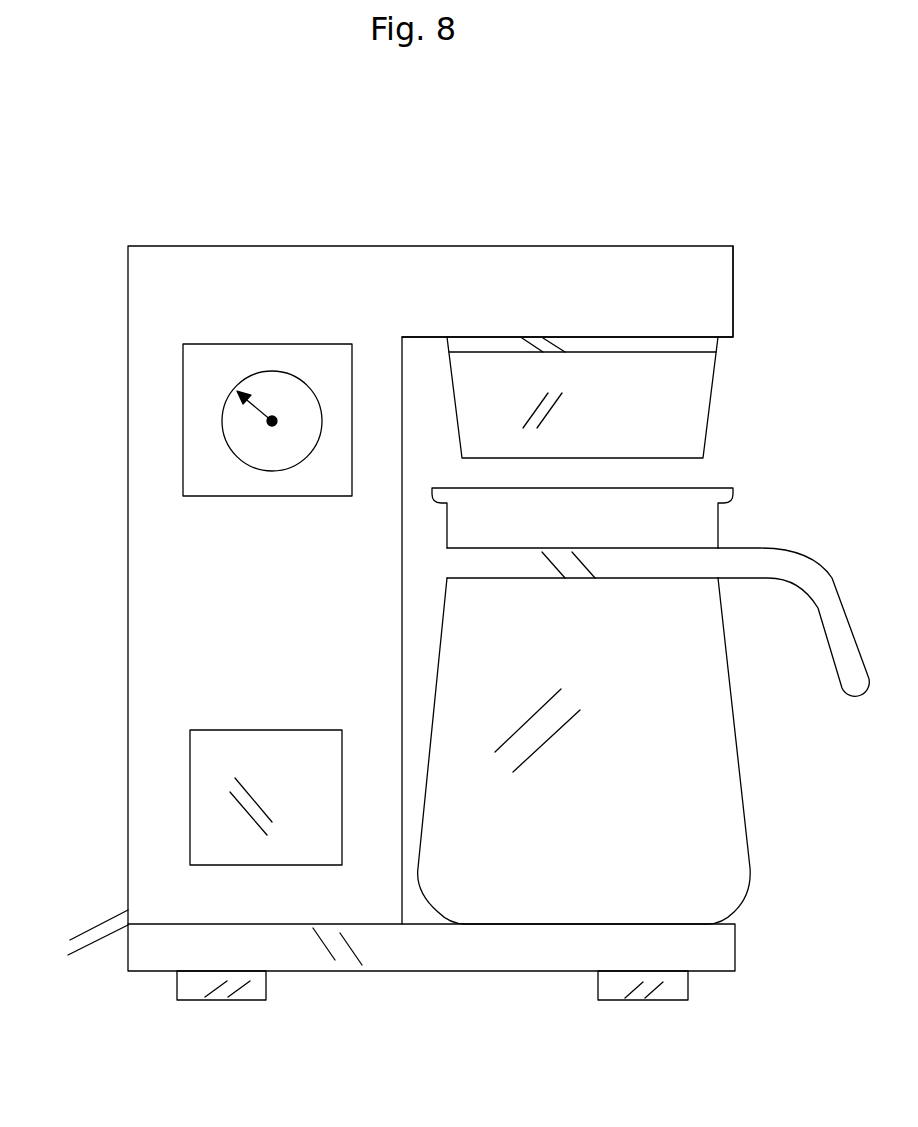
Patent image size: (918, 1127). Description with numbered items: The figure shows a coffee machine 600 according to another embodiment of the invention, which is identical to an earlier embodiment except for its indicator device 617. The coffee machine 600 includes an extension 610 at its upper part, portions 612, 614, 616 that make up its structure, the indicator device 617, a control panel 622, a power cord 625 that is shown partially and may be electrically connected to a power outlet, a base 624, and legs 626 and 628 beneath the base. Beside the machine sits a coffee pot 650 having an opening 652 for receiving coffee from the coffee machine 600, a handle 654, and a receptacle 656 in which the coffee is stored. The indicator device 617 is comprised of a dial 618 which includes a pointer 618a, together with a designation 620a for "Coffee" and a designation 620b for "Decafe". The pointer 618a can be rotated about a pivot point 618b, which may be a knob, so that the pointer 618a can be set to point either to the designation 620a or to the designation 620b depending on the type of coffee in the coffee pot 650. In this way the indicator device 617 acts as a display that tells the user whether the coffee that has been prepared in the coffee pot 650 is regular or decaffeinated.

The coffee machine 600 is at (592, 221).
The extension 610 is at (515, 298).
The portion 612 is at (673, 410).
The portion 614 is at (713, 347).
The portion 616 is at (158, 420).
The indicator device 617 is at (353, 343).
The dial 618 is at (273, 377).
The pointer 618a is at (258, 418).
The pivot point 618b is at (277, 427).
The designation for "Coffee" 620a is at (210, 357).
The designation for "Decafe" 620b is at (328, 365).
The control panel 622 is at (230, 763).
The base 624 is at (163, 953).
The power cord 625 is at (92, 927).
The leg 626 is at (188, 992).
The leg 628 is at (628, 992).
The coffee pot 650 is at (773, 532).
The opening 652 is at (693, 485).
The handle 654 is at (790, 575).
The receptacle 656 is at (680, 773).